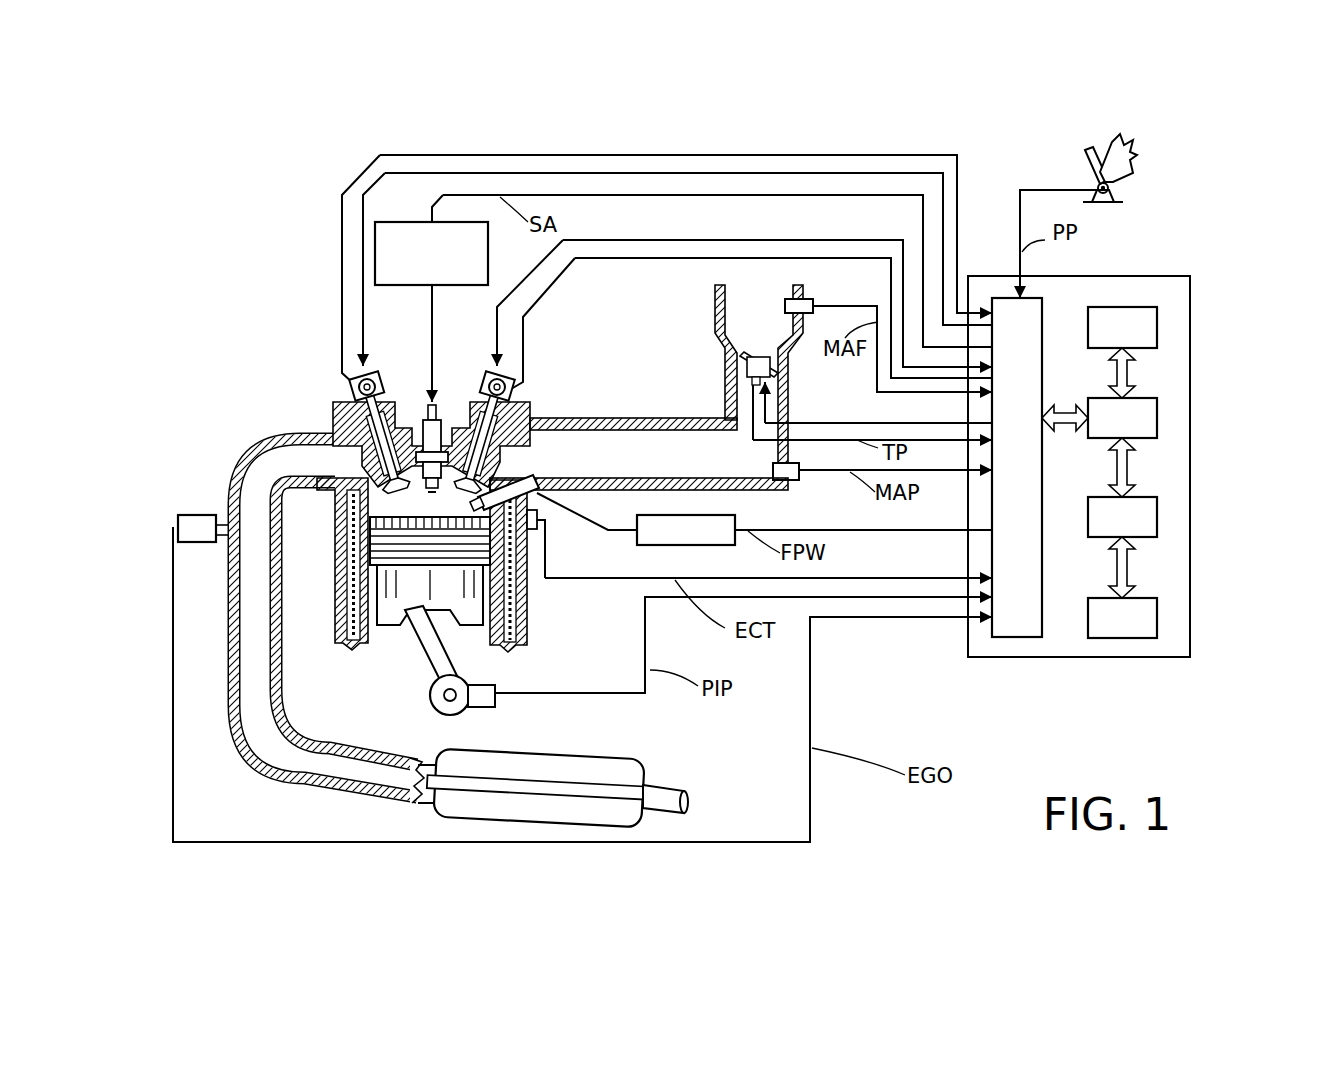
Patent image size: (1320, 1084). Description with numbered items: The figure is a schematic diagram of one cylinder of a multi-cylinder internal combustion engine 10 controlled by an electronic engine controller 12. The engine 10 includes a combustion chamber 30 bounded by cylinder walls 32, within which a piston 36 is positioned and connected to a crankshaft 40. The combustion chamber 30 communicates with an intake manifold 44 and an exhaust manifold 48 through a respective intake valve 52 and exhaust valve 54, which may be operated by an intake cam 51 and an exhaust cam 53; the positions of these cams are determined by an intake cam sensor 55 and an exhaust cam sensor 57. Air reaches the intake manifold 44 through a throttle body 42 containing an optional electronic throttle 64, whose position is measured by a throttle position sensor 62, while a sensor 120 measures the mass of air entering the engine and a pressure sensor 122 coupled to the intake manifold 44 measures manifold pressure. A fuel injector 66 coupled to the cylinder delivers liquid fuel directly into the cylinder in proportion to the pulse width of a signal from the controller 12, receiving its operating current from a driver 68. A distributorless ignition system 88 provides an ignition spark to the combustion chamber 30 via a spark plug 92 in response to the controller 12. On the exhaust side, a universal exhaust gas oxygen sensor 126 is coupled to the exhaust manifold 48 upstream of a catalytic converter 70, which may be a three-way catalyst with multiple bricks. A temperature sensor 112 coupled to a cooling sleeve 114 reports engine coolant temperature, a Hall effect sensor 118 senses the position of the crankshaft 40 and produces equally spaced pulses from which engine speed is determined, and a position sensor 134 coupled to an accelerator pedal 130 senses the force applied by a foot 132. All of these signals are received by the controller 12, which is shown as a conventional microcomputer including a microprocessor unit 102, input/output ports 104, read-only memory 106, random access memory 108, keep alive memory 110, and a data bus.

The internal combustion engine 10 is at (268, 352).
The electronic engine controller 12 is at (1188, 280).
The combustion chamber 30 is at (358, 590).
The cylinder walls 32 is at (368, 630).
The piston 36 is at (412, 600).
The crankshaft 40 is at (437, 710).
The throttle body / intake passage 42 is at (742, 334).
The intake manifold 44 is at (684, 470).
The exhaust manifold 48 is at (287, 474).
The intake cam 51 is at (511, 401).
The intake valve 52 is at (470, 480).
The exhaust cam 53 is at (354, 403).
The exhaust valve 54 is at (390, 473).
The intake cam sensor 55 is at (508, 388).
The exhaust cam sensor 57 is at (352, 385).
The throttle position sensor 62 is at (780, 366).
The electronic throttle 64 is at (742, 362).
The fuel injector 66 is at (540, 500).
The driver 68 is at (664, 545).
The catalytic converter 70 is at (606, 760).
The distributorless ignition system 88 is at (392, 222).
The spark plug 92 is at (436, 400).
The microprocessor unit 102 is at (1158, 420).
The input/output ports 104 is at (1045, 308).
The read-only memory 106 is at (1158, 325).
The random access memory 108 is at (1158, 517).
The keep alive memory 110 is at (1158, 618).
The temperature sensor 112 is at (542, 528).
The cooling sleeve 114 is at (522, 600).
The Hall effect sensor 118 is at (488, 708).
The air mass sensor 120 is at (812, 300).
The pressure sensor 122 is at (795, 481).
The Universal Exhaust Gas Oxygen sensor 126 is at (178, 520).
The accelerator pedal 130 is at (1137, 170).
The foot 132 is at (1140, 155).
The position sensor 134 is at (1110, 190).